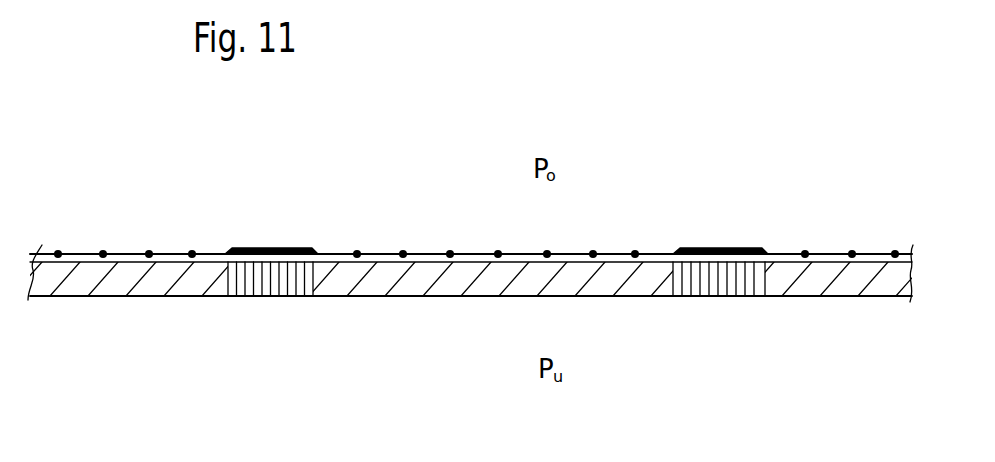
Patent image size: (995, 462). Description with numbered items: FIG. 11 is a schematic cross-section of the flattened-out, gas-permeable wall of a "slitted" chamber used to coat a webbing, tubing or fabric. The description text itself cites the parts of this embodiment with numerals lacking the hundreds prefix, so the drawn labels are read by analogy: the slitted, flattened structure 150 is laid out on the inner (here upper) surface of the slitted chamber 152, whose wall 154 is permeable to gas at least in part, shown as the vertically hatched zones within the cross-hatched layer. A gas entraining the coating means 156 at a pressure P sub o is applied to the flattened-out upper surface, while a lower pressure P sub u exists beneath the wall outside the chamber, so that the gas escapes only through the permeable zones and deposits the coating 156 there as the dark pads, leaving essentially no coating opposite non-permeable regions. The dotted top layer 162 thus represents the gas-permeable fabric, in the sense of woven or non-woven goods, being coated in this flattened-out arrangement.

The printing form / carrier sheet 150 is at (373, 337).
The upper cover layer 152 is at (685, 198).
The porous (perforated) region 154 is at (742, 296).
The electrode / heating pad 156 is at (275, 250).
The contact points 162 is at (122, 252).